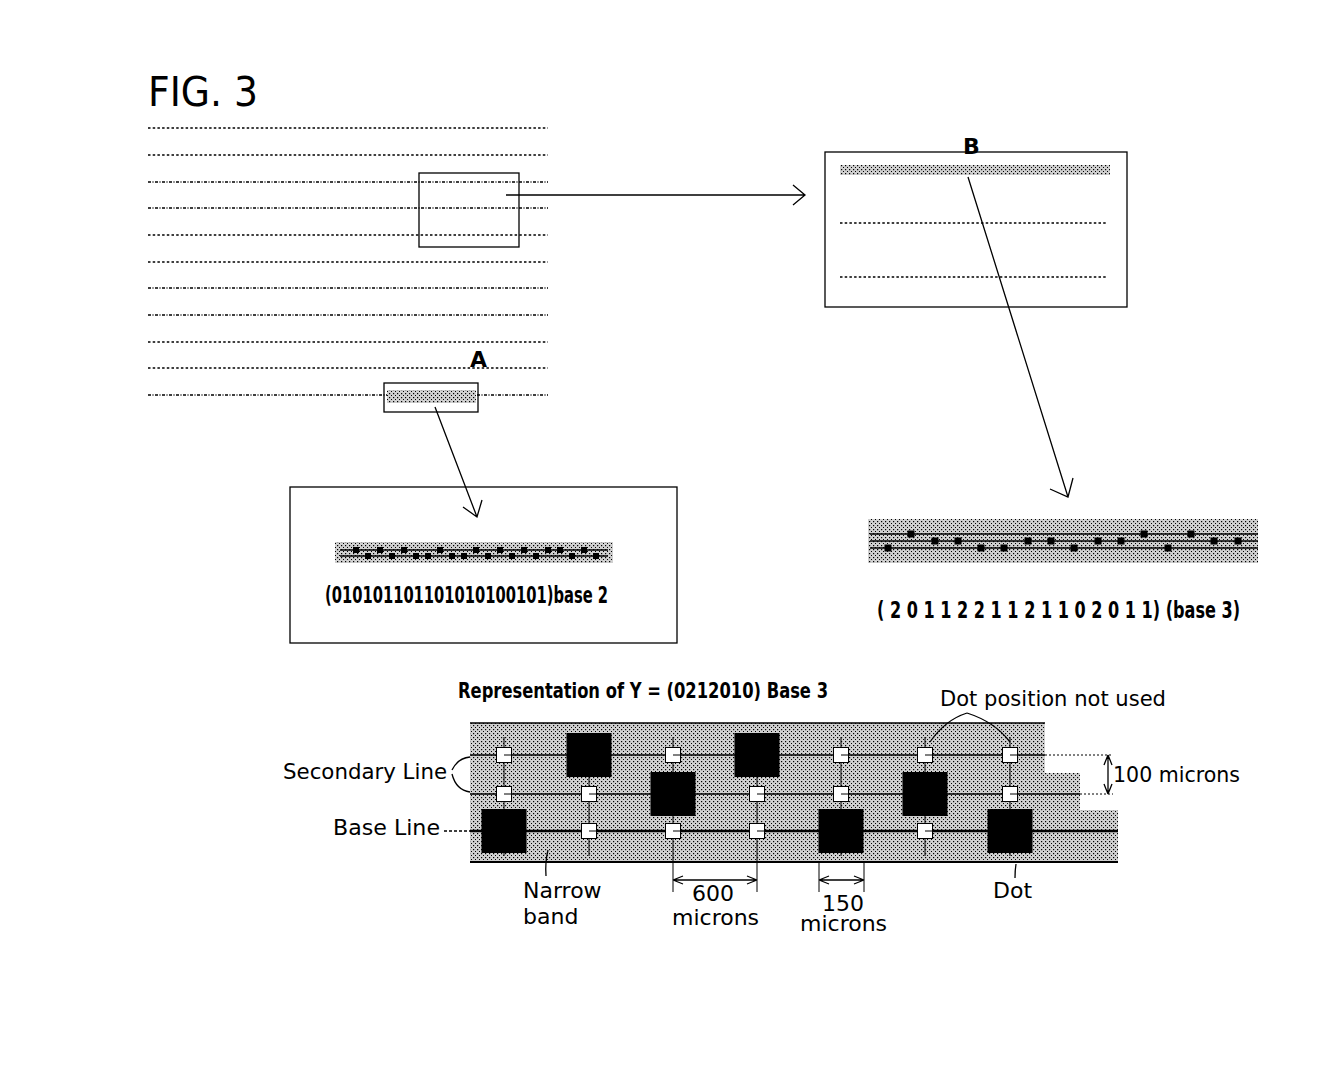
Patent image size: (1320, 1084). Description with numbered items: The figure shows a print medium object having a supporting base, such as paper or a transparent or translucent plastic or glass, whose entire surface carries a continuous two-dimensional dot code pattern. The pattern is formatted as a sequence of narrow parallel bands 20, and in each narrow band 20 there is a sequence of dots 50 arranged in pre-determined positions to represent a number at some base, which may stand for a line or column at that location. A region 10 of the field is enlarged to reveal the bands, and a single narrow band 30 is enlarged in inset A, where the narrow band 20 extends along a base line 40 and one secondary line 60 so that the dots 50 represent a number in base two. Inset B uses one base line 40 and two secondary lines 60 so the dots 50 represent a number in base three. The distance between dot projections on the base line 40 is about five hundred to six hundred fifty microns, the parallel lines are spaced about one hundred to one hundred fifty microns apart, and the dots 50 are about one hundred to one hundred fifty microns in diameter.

The enlarged portion of printed line field 10 is at (500, 188).
The narrow band 20 is at (874, 167).
The narrow band 30 is at (481, 404).
The base line 40 is at (326, 561).
The dots 50 is at (356, 545).
The secondary line 60 is at (620, 543).